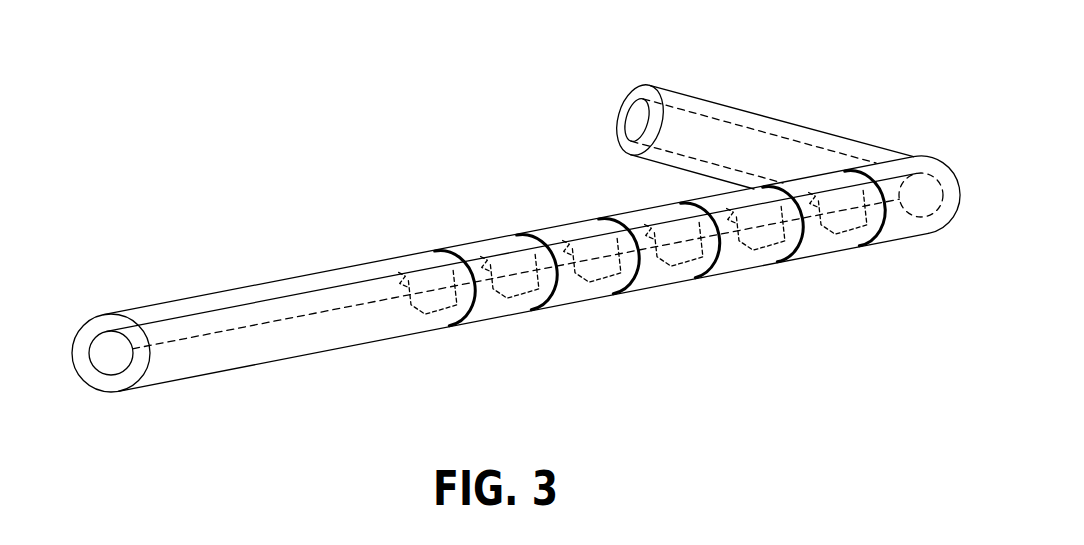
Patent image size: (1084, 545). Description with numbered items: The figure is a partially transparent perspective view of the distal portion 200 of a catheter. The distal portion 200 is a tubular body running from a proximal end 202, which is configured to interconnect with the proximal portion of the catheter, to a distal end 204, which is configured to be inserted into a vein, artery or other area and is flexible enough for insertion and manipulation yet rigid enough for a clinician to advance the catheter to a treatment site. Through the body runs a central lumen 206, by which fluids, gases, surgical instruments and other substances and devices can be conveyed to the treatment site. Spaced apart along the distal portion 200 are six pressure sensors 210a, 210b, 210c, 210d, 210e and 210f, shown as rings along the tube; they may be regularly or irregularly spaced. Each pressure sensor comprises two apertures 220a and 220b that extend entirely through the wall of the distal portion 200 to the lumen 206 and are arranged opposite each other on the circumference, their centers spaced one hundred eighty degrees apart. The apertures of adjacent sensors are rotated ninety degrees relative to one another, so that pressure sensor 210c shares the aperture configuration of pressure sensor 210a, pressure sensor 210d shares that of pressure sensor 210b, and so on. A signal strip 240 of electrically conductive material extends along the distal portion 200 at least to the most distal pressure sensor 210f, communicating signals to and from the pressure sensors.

The distal portion 200 is at (800, 65).
The proximal end 202 is at (120, 391).
The distal end 204 is at (626, 118).
The central lumen 206 is at (103, 357).
The signal strip 240 is at (197, 305).
The pressure sensor 210a is at (477, 320).
The pressure sensor 210b is at (553, 306).
The pressure sensor 210c is at (637, 291).
The pressure sensor 210d is at (712, 278).
The pressure sensor 210e is at (800, 260).
The pressure sensor 210f is at (880, 245).
The aperture 220a is at (445, 270).
The aperture 220b is at (545, 267).